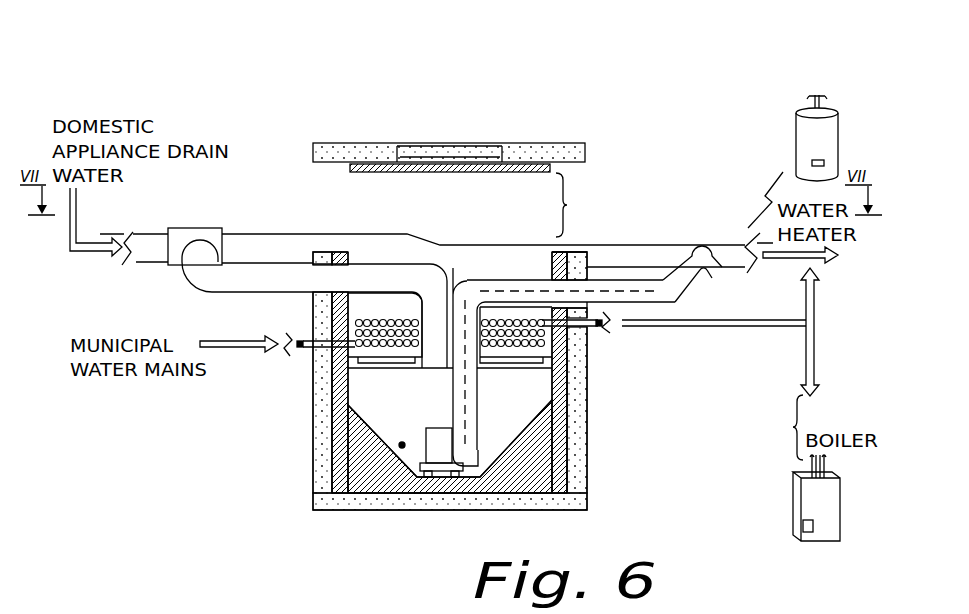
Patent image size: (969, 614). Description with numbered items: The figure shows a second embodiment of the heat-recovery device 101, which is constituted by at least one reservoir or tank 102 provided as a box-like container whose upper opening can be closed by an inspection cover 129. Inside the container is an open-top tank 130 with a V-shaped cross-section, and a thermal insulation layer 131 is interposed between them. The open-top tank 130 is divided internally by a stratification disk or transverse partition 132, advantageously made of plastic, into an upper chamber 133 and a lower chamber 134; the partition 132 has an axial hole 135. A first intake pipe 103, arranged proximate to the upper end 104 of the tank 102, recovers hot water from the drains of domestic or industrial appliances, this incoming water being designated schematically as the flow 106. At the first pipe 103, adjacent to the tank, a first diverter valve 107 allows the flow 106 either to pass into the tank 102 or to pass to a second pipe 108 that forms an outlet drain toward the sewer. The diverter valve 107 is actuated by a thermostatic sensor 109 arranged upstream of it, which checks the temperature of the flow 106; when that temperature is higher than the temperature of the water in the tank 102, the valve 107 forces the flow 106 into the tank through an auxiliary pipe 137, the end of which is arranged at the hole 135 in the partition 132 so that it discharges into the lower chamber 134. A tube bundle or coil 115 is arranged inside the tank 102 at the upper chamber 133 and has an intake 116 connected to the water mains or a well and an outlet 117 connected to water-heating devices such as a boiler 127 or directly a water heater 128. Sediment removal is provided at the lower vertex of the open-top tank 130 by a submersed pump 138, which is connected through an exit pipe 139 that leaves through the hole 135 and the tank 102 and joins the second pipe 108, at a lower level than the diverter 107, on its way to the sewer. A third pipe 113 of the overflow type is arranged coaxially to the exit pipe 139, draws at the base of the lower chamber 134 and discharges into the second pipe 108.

The device 101 is at (620, 108).
The tank 102 is at (584, 240).
The first intake pipe 103 is at (157, 237).
The upper end 104 is at (603, 250).
The flow of water 106 is at (72, 236).
The first diverter valve 107 is at (174, 275).
The second pipe 108 is at (297, 245).
The thermostatic sensor 109 is at (136, 260).
The third pipe 113 is at (698, 283).
The coil 115 is at (382, 309).
The intake 116 is at (296, 356).
The outlet 117 is at (770, 330).
The boiler 127 is at (813, 500).
The water heater 128 is at (810, 143).
The inspection cover 129 is at (378, 143).
The open-top tank 130 is at (557, 386).
The thermal insulation layer 131 is at (562, 452).
The transverse partition 132 is at (367, 372).
The upper chamber 133 is at (490, 263).
The lower chamber 134 is at (391, 435).
The axial hole 135 is at (444, 382).
The auxiliary pipe 137 is at (236, 277).
The submersed pump 138 is at (434, 480).
The exit pipe 139 is at (513, 500).